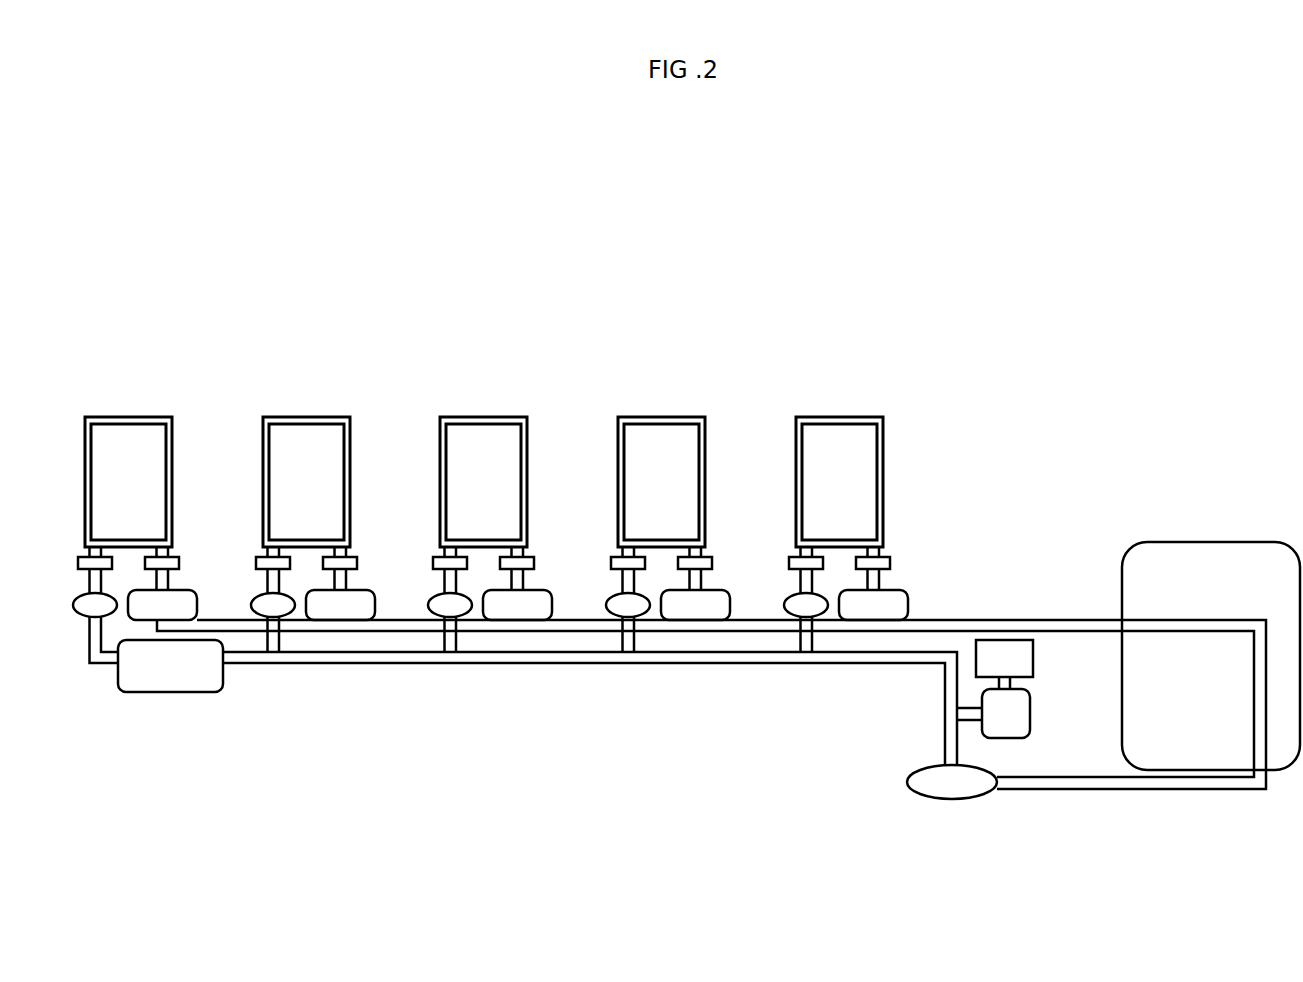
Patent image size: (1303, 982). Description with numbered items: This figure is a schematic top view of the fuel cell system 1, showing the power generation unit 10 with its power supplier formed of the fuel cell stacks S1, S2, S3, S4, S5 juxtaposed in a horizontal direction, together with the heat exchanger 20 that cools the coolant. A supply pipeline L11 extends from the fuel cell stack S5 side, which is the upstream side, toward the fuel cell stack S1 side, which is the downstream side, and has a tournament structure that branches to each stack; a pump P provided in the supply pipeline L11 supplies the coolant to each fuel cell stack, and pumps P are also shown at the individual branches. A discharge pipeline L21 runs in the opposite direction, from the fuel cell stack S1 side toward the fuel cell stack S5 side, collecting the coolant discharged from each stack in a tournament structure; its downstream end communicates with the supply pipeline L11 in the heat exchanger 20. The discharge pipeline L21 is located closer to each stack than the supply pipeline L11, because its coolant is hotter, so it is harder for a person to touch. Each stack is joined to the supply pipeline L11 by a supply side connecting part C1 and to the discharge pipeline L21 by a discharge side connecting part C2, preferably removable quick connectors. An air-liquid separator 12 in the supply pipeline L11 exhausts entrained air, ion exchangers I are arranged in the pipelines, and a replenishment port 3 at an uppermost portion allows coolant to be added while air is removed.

The fuel cell system 1 is at (940, 262).
The power generation unit 10 is at (543, 285).
The heat exchanger 20 is at (1228, 482).
The air-liquid separator 12 is at (162, 692).
The replenishment port 3 is at (1005, 640).
The fuel cell stack S1 is at (140, 417).
The fuel cell stack S2 is at (318, 417).
The fuel cell stack S3 is at (495, 417).
The fuel cell stack S4 is at (673, 417).
The fuel cell stack S5 is at (851, 417).
The supply side connecting part C1 is at (80, 557).
The discharge side connecting part C2 is at (178, 557).
The pump P is at (80, 597).
The ion exchanger I is at (180, 590).
The supply pipeline L11 is at (555, 663).
The discharge pipeline L21 is at (593, 631).